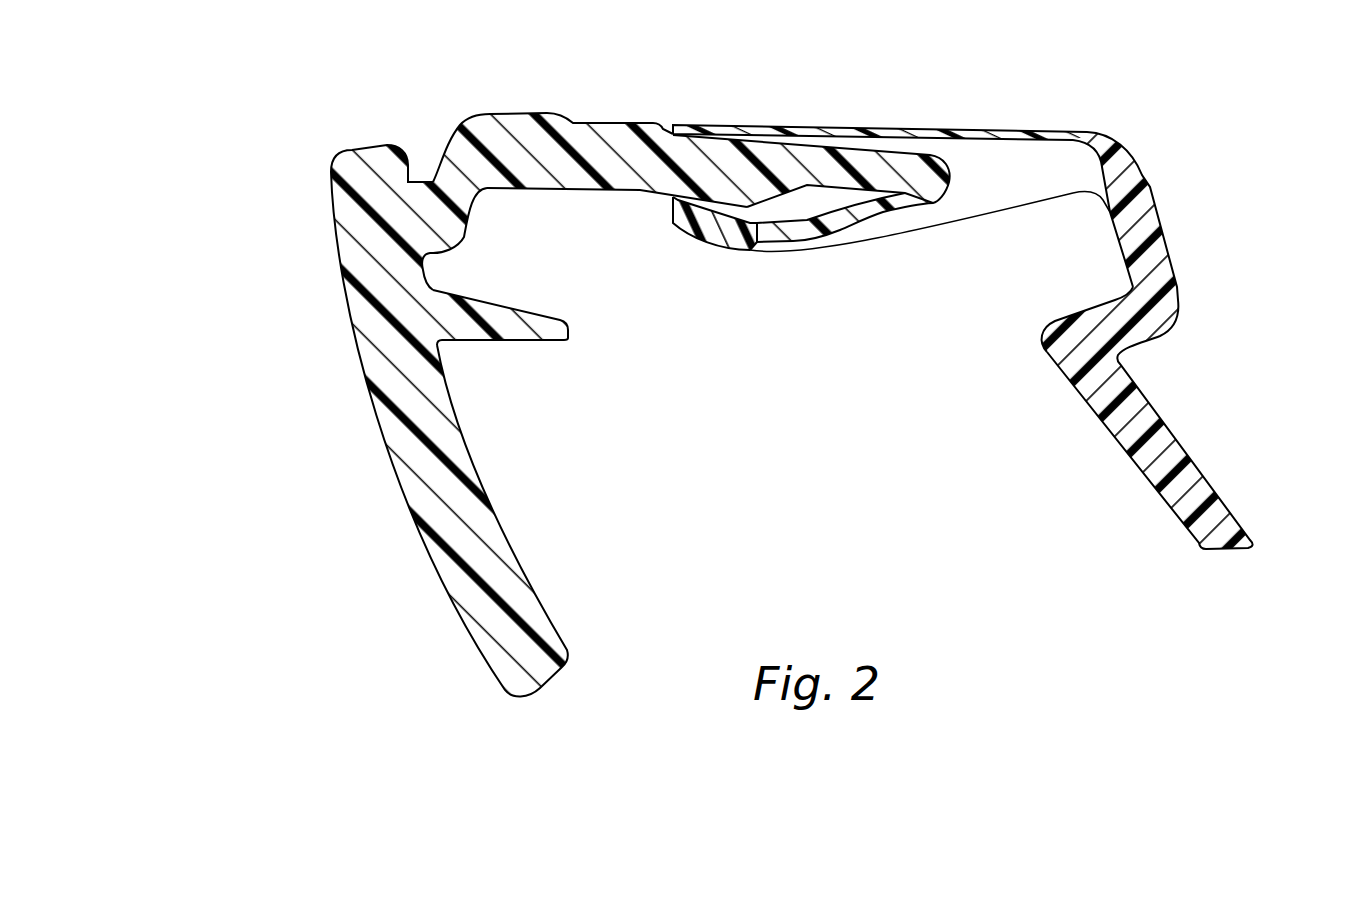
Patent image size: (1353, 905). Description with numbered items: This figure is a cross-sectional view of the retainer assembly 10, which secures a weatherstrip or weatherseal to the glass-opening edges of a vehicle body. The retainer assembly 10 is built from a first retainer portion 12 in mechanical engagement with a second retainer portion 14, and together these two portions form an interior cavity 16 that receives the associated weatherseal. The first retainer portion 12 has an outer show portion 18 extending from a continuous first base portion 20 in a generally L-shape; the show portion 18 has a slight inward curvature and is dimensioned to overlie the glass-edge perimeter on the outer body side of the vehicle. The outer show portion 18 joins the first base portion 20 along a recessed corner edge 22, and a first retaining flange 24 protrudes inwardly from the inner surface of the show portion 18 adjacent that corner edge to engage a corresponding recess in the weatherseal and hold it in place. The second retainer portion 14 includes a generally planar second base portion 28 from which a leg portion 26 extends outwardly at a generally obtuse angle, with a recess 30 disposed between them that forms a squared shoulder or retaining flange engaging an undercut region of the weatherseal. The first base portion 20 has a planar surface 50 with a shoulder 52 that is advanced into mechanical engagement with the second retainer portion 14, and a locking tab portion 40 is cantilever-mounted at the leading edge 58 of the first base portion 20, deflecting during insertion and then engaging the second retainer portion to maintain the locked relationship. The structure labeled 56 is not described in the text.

The retainer assembly 10 is at (1220, 90).
The first retainer portion 12 is at (282, 444).
The second retainer portion 14 is at (1222, 246).
The interior cavity 16 is at (873, 516).
The outer show portion 18 is at (435, 566).
The first base portion 20 is at (466, 123).
The recessed corner edge 22 is at (463, 236).
The first retaining flange 24 is at (553, 341).
The leg portion 26 is at (1195, 462).
The second base portion 28 is at (1023, 128).
The recess 30 is at (1087, 311).
The locking tab portion 40 is at (792, 252).
The planar surface 50 is at (608, 122).
The shoulder 52 is at (652, 128).
The channel 56 is at (847, 192).
The leading edge 58 is at (943, 165).